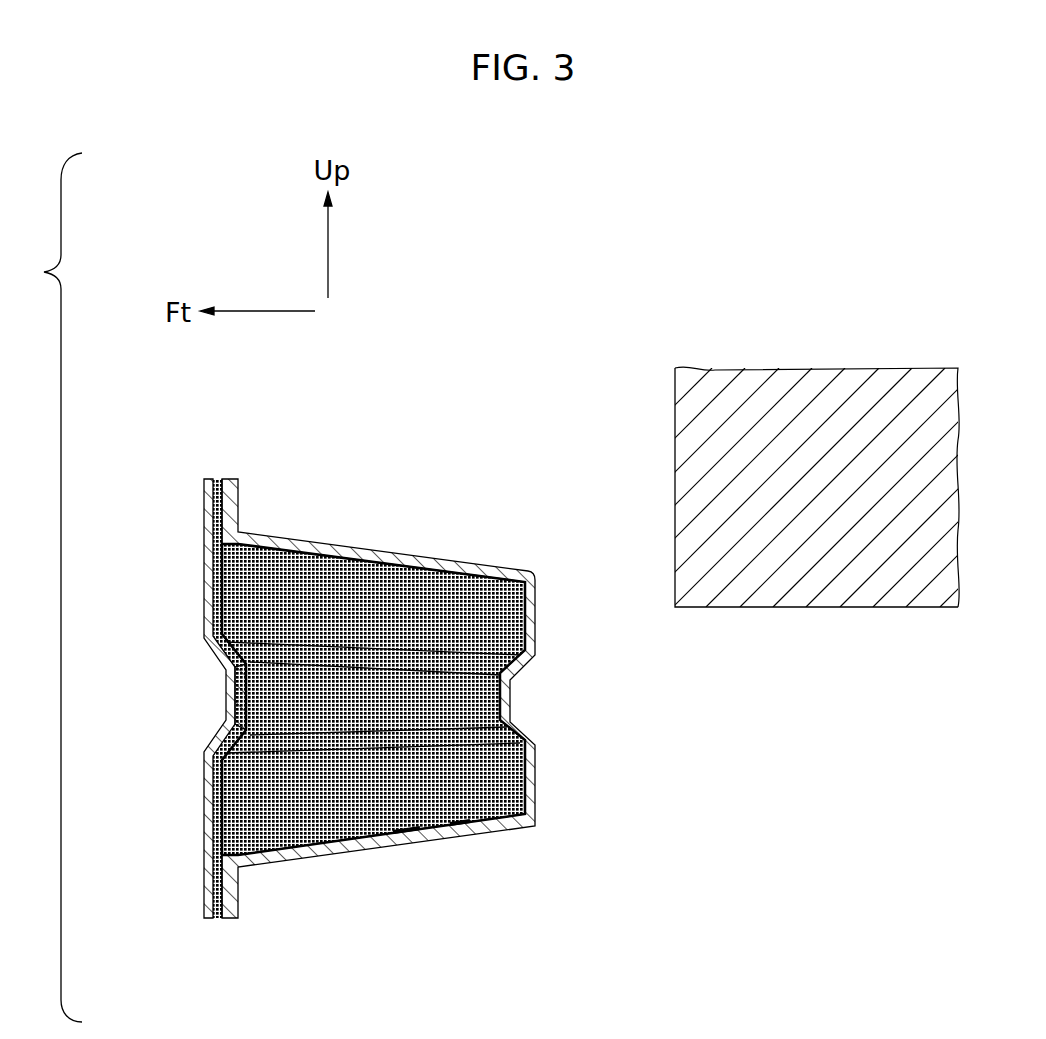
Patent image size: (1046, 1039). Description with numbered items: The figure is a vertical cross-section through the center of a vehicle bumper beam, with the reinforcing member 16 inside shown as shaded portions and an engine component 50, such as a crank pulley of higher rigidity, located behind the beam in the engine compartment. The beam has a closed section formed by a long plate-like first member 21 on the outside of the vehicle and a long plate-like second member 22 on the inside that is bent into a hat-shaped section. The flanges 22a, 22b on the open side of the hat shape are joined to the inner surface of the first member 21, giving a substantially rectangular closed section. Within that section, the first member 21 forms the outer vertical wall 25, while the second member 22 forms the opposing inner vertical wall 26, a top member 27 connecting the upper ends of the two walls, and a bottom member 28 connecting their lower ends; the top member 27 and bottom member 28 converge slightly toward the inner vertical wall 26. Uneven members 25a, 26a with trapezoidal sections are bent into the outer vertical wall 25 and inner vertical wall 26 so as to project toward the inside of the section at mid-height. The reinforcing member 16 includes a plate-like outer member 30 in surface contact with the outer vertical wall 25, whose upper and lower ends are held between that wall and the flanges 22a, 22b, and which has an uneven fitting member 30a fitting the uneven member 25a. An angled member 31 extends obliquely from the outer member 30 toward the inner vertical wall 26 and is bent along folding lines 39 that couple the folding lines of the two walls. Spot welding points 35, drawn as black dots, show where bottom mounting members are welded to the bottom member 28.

The reinforcing member 16 is at (245, 808).
The first member 21 is at (204, 535).
The second member 22 is at (285, 540).
The flange 22a is at (238, 498).
The flange 22b is at (232, 897).
The outer vertical wall 25 is at (210, 595).
The uneven member 25a is at (246, 677).
The inner vertical wall 26 is at (530, 622).
The uneven member 26a is at (512, 697).
The top member 27 is at (372, 545).
The bottom member 28 is at (328, 853).
The outer member 30 is at (223, 479).
The uneven fitting member 30a is at (225, 720).
The angled member 31 is at (485, 585).
The spot welding point 35 is at (410, 838).
The folding line 39 is at (485, 750).
The engine component 50 is at (848, 607).